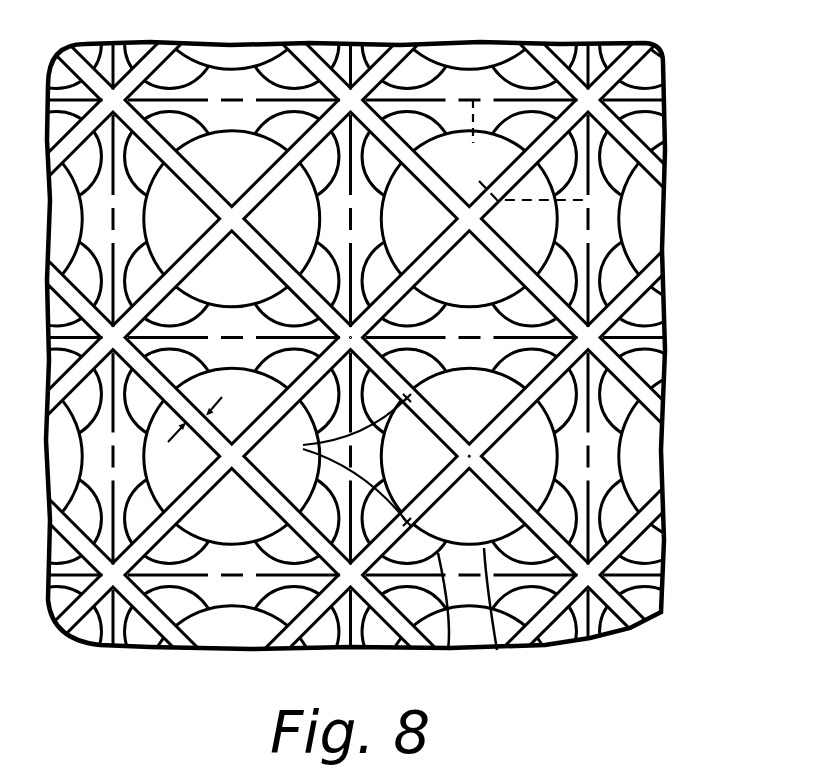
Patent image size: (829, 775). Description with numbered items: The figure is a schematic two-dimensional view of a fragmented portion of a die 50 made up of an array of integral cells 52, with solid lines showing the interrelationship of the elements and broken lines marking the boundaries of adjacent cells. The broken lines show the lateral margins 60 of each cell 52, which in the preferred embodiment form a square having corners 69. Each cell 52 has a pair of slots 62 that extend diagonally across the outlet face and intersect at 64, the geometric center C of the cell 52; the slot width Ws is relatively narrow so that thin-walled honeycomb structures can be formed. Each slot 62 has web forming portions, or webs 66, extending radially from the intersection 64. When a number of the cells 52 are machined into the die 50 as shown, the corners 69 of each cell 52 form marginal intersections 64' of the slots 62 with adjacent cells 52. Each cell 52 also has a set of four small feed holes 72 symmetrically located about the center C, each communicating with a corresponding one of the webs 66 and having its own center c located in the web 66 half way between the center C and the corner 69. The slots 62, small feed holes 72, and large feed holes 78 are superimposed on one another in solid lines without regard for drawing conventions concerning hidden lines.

The die 50 is at (678, 47).
The cell 52 is at (612, 146).
The lateral margins 60 is at (521, 150).
The slots 62 is at (648, 626).
The intersection 64 is at (469, 420).
The marginal intersections 64' is at (419, 305).
The webs 66 is at (667, 483).
The corners 69 is at (343, 332).
The small feed holes 72 is at (448, 650).
The large feed holes 78 is at (497, 650).
The geometric center C is at (478, 451).
The center of small feed hole c is at (297, 461).
The slot width Ws is at (208, 419).